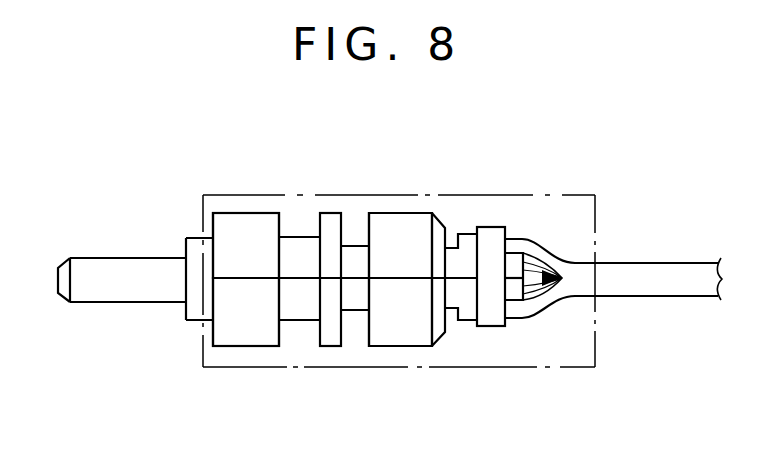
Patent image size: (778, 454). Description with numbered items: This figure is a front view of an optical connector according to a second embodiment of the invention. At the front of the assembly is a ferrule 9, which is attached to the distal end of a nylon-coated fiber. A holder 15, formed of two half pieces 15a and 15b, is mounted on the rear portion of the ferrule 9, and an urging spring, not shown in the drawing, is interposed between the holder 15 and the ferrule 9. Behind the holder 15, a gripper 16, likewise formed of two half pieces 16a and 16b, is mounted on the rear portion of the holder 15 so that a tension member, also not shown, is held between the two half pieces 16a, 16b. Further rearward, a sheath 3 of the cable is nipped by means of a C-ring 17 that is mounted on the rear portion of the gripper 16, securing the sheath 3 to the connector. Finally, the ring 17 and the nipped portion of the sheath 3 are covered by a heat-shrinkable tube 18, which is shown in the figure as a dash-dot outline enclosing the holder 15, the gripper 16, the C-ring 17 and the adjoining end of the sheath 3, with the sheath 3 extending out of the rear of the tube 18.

The sheath 3 is at (657, 288).
The ferrule 9 is at (100, 268).
The holder 15 is at (255, 214).
The half piece 15a is at (226, 231).
The half piece 15b is at (243, 335).
The gripper 16 is at (412, 214).
The half piece 16a is at (387, 229).
The half piece 16b is at (398, 335).
The C-ring 17 is at (493, 318).
The heat-shrinkable tube 18 is at (538, 207).